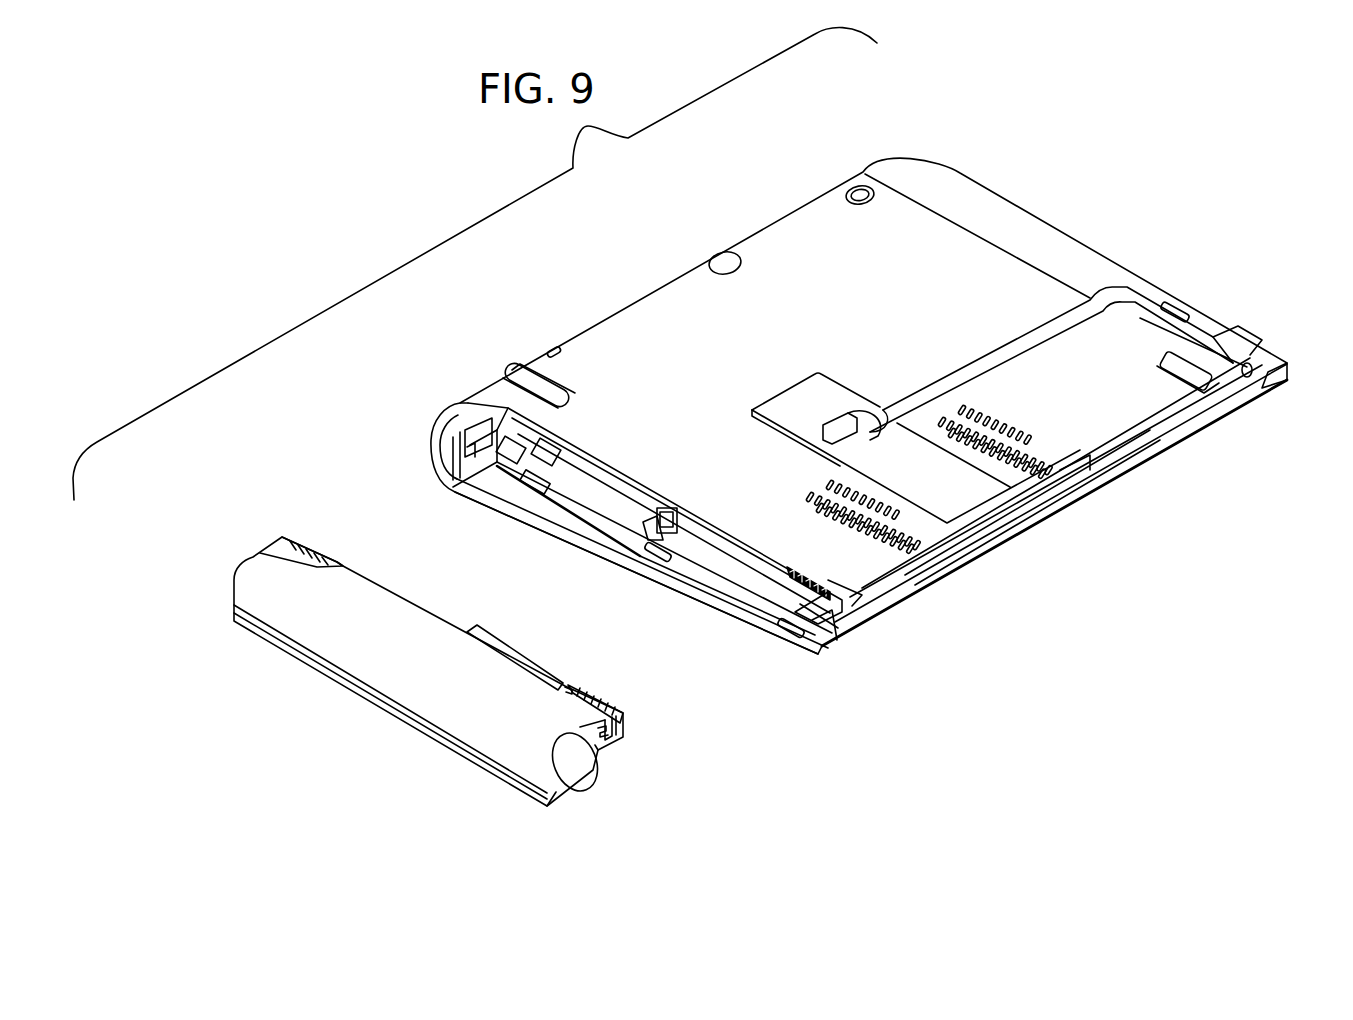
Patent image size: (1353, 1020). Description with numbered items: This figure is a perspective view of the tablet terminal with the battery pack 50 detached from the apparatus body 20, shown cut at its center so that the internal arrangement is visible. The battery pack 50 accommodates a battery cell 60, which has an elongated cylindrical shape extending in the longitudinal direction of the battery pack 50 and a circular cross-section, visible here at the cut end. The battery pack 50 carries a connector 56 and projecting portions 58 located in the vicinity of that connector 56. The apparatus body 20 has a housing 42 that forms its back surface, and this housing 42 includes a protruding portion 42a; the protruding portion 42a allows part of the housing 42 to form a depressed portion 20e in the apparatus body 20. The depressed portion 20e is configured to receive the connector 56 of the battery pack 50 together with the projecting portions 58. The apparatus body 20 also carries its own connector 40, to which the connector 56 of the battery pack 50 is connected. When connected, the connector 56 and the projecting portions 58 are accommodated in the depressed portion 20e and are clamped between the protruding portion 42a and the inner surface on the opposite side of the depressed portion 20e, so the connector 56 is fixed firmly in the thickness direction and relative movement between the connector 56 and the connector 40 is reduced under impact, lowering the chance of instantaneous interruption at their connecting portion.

The apparatus body 20 is at (1047, 207).
The housing 42 is at (632, 330).
The protruding portion 42a is at (790, 558).
The connector 40 is at (803, 598).
The depressed portion 20e is at (707, 550).
The battery pack 50 is at (382, 727).
The connector 56 is at (618, 694).
The projecting portions 58 is at (500, 652).
The battery cell 60 is at (590, 762).